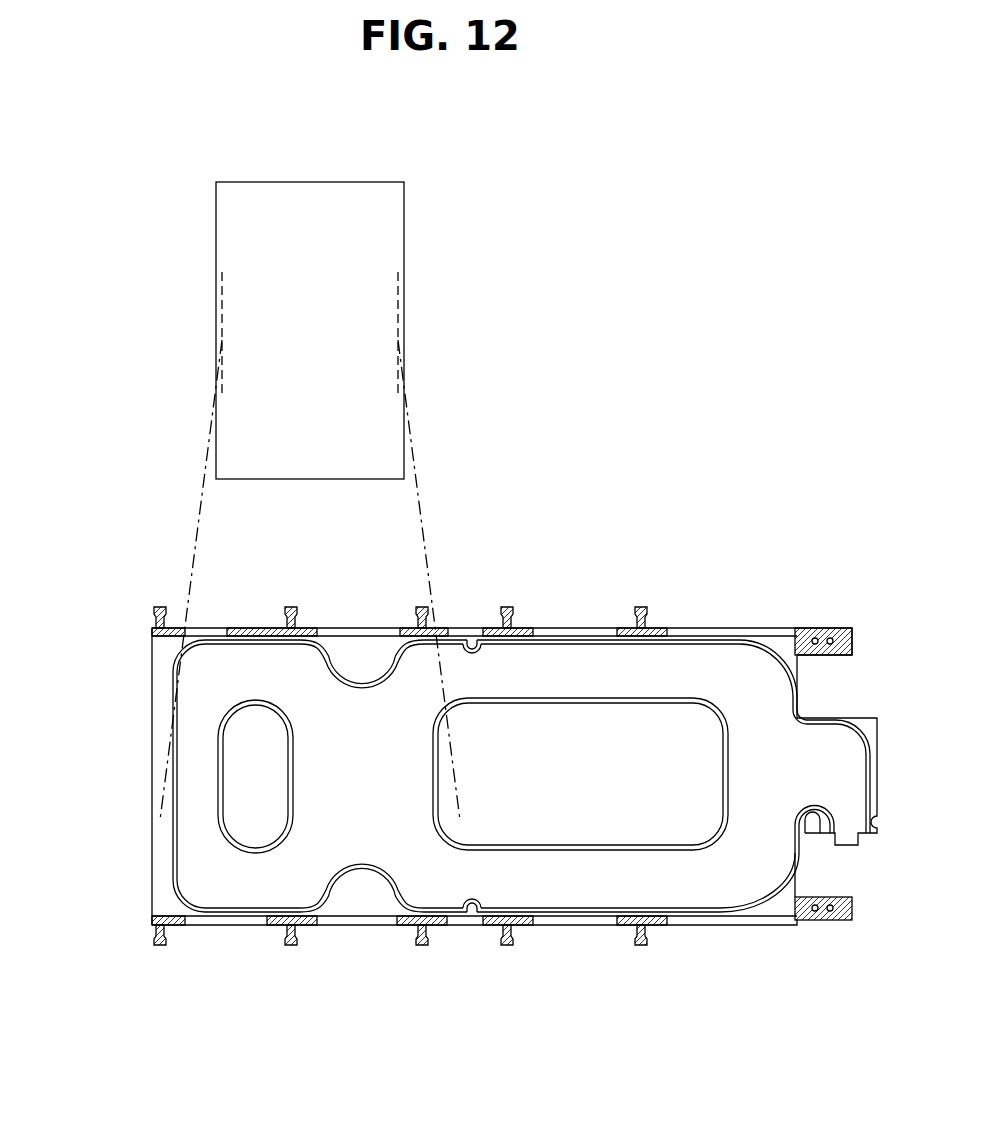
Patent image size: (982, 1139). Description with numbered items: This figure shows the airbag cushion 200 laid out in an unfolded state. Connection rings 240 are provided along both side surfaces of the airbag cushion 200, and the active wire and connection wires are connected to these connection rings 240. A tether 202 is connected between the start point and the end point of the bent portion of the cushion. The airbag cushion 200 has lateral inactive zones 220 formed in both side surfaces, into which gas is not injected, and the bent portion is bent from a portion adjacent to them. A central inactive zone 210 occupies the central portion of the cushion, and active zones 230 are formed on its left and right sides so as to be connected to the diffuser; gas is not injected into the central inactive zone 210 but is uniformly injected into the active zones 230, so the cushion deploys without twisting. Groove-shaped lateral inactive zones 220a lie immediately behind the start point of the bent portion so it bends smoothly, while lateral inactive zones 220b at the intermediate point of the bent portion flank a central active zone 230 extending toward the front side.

The airbag cushion 200 is at (727, 614).
The tether 202 is at (298, 205).
The central inactive zone 210 is at (570, 800).
The lateral inactive zones 220 is at (492, 1046).
The lateral inactive zones 220a is at (472, 642).
The lateral inactive zones 220b is at (362, 655).
The active zones 230 is at (572, 668).
The connection rings 240 is at (641, 607).